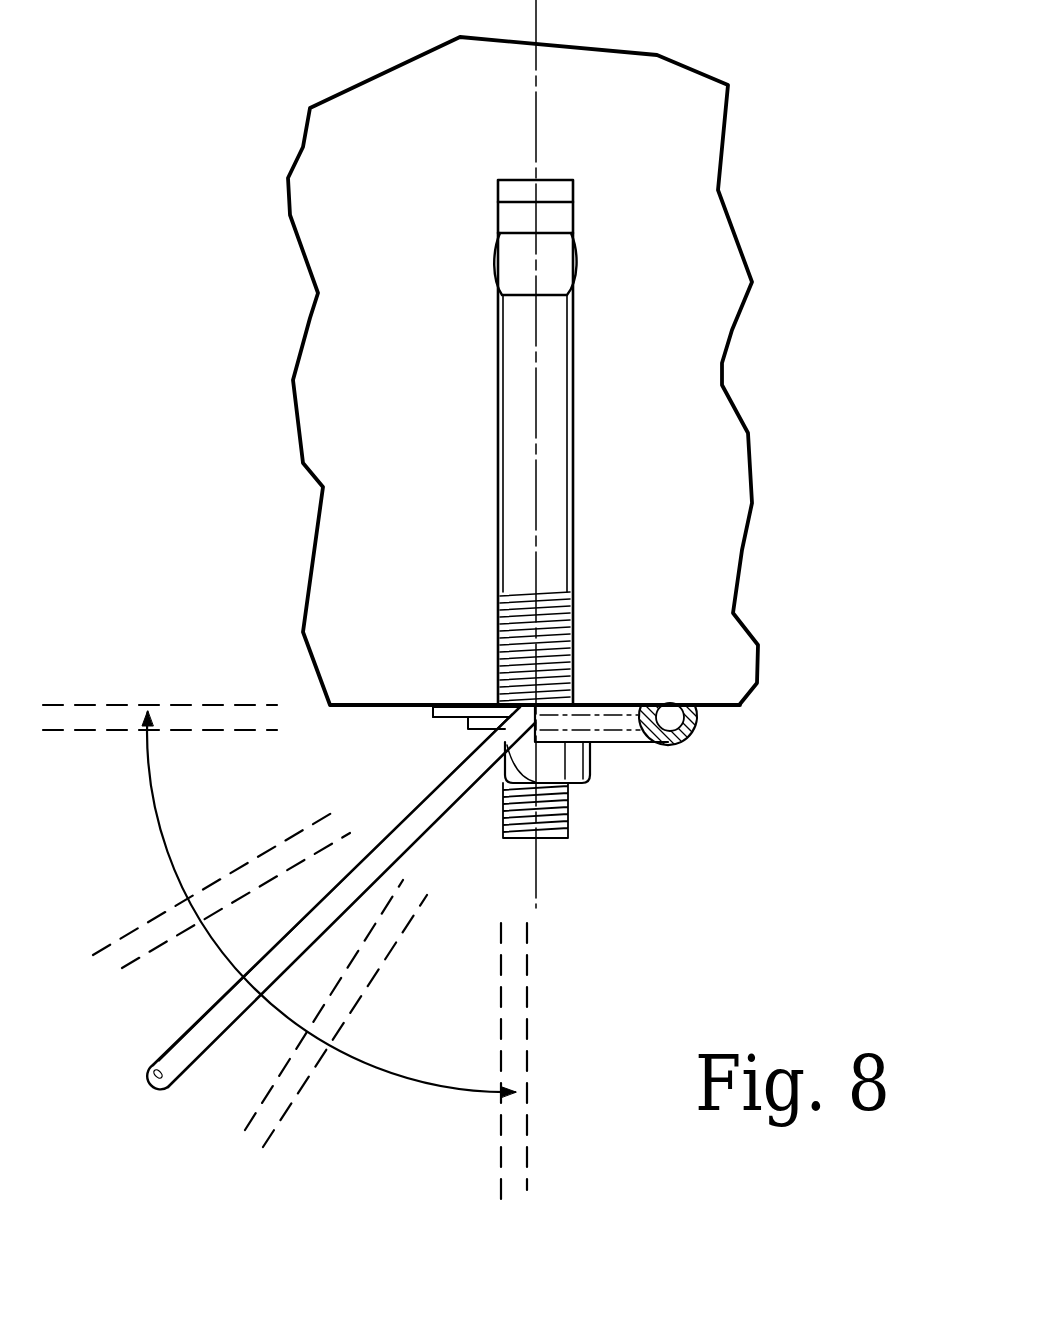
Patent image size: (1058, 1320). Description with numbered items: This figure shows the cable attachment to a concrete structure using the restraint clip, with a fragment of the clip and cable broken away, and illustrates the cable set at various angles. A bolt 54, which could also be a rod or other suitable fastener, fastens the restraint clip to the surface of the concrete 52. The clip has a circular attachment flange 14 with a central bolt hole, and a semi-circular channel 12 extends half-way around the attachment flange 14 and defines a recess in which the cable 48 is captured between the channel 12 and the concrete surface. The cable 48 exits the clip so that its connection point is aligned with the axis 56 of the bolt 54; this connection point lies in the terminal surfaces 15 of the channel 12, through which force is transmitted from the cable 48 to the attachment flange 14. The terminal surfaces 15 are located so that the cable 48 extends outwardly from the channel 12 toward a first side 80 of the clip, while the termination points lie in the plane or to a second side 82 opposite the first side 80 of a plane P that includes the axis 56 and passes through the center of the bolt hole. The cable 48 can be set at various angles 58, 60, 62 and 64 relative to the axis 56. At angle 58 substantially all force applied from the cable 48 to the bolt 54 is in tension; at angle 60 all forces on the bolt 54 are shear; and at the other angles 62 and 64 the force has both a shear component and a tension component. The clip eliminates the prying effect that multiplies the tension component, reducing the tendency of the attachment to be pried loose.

The semi-circular channel 12 is at (698, 735).
The circular attachment flange 14 is at (450, 722).
The terminal surfaces 15 is at (568, 797).
The cable 48 is at (198, 1052).
The concrete 52 is at (693, 462).
The bolt 54 is at (553, 385).
The axis of the bolt 56 is at (537, 883).
The angle 58 is at (512, 1151).
The angle 60 is at (77, 712).
The angle 62 is at (147, 927).
The angle 64 is at (288, 1078).
The first side of the restraint clip 80 is at (433, 713).
The second side of the restraint clip 82 is at (697, 727).